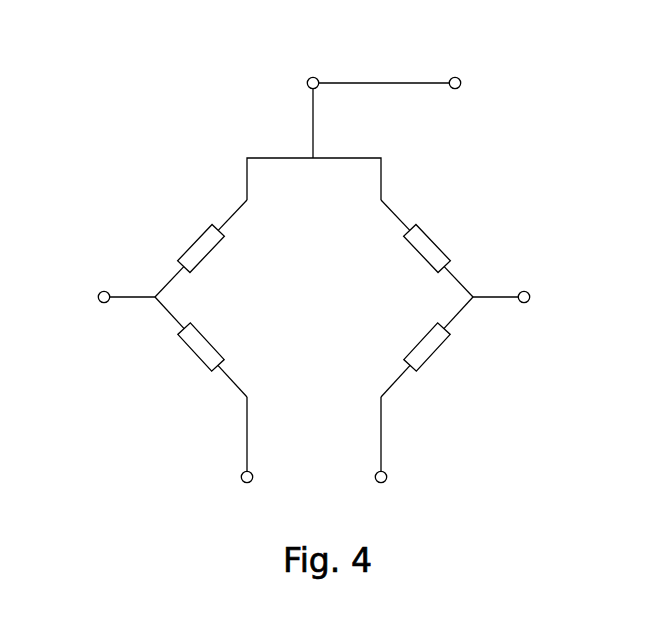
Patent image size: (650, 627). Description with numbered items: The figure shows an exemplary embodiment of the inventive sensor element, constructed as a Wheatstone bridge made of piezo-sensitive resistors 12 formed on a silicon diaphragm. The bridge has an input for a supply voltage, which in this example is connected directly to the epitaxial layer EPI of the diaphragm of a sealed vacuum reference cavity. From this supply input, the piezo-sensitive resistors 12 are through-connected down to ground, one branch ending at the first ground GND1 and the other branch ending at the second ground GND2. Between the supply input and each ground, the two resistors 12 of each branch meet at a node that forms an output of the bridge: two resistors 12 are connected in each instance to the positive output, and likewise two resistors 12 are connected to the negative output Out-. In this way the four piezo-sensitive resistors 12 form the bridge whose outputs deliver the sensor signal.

The piezo-sensitive resistors 12 is at (198, 240).
The epitaxial layer EPI is at (399, 69).
The negative output Out- is at (526, 297).
The ground GND1 is at (254, 455).
The ground GND2 is at (388, 455).